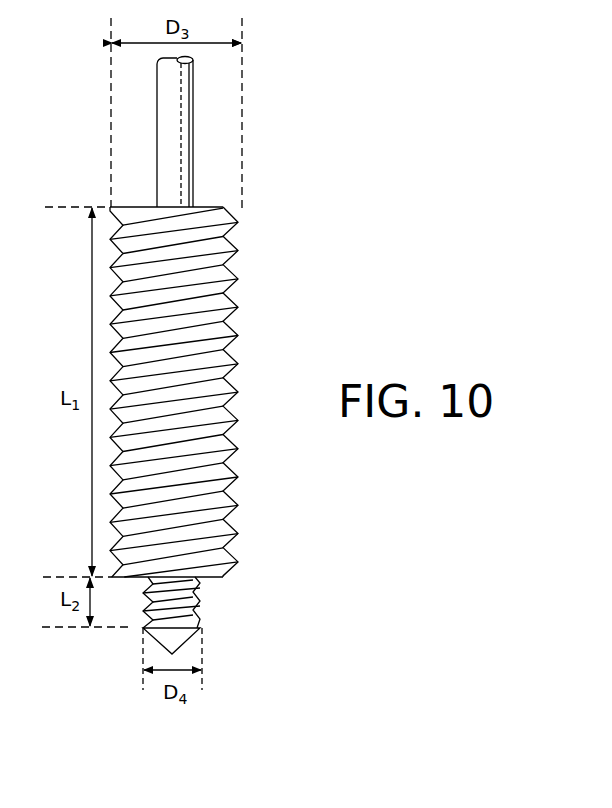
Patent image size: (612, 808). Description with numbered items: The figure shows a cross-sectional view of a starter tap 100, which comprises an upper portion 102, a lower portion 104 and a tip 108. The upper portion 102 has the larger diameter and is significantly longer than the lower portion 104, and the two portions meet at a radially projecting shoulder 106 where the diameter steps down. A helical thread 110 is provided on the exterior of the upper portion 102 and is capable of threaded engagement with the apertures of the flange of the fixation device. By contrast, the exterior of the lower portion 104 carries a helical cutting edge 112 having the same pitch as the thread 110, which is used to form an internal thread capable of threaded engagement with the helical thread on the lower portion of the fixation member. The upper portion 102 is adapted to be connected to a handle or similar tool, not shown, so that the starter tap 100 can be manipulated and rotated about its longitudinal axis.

The starter tap 100 is at (272, 229).
The upper portion 102 is at (213, 287).
The lower portion 104 is at (145, 610).
The radially projecting shoulder 106 is at (217, 581).
The tip 108 is at (203, 647).
The helical thread 110 is at (239, 505).
The helical cutting edge 112 is at (200, 617).